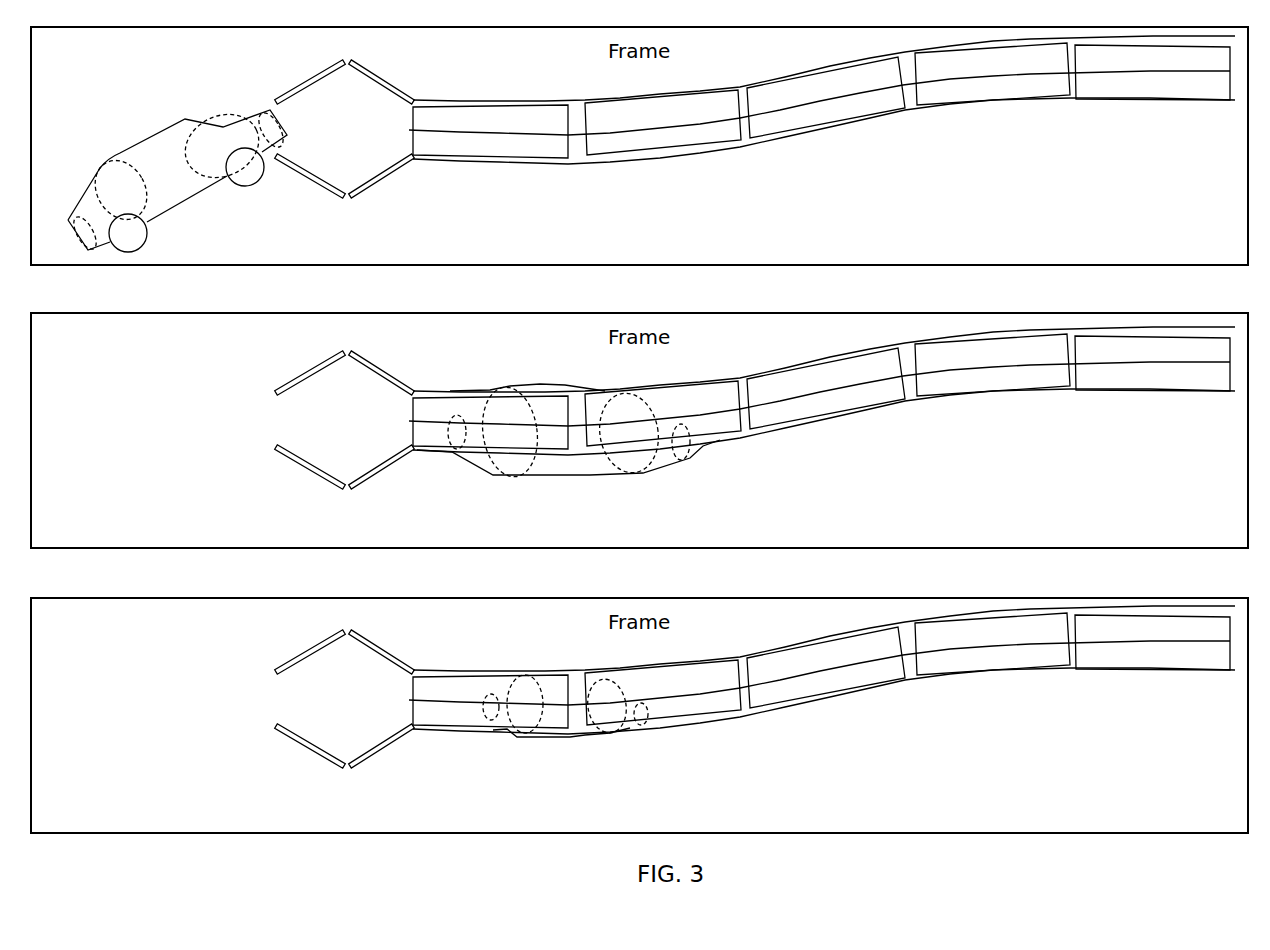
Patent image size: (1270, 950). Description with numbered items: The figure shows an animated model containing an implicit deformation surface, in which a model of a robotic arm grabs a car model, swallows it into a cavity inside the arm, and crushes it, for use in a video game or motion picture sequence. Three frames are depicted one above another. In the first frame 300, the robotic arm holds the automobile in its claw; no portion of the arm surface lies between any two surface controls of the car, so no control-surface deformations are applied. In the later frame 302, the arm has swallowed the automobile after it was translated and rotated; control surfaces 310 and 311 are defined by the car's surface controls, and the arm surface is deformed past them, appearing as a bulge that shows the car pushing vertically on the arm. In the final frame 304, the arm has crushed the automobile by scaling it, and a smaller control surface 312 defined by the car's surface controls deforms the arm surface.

The frame 300 is at (1232, 247).
The frame 302 is at (1232, 532).
The frame 304 is at (1232, 817).
The control surface 310 is at (599, 475).
The control surface 311 is at (563, 388).
The control surface 312 is at (577, 732).